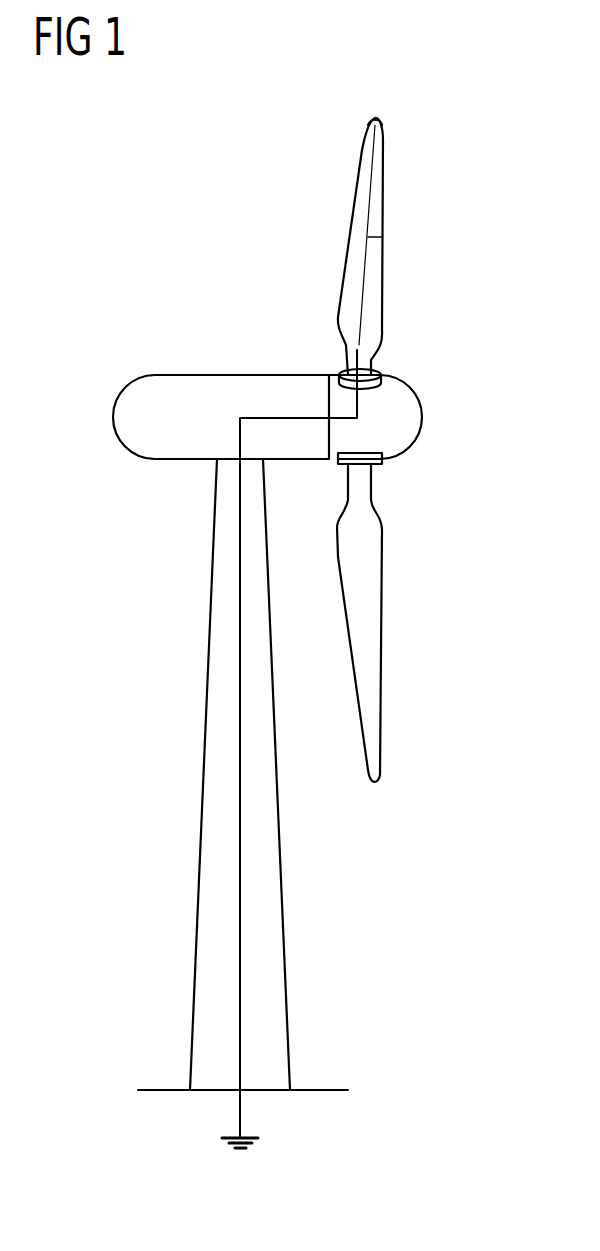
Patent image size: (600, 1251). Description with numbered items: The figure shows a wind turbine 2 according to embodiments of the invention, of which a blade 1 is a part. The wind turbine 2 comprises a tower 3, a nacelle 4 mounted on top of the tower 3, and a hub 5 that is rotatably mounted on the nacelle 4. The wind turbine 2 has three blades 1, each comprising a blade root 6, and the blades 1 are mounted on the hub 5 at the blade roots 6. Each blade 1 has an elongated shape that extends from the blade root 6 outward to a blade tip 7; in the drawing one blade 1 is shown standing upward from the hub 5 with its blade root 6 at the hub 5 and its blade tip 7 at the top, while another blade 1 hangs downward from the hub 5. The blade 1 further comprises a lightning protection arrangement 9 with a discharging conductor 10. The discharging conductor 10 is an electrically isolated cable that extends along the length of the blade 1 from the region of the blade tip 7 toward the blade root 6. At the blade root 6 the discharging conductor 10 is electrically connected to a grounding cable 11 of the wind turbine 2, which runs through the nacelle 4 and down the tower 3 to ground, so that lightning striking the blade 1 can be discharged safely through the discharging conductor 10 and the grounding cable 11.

The blade 1 is at (397, 179).
The wind turbine 2 is at (168, 198).
The tower 3 is at (282, 893).
The nacelle 4 is at (182, 375).
The hub 5 is at (408, 419).
The blade root 6 is at (368, 360).
The blade tip 7 is at (375, 116).
The lightning protection arrangement 9 is at (326, 222).
The discharging conductor 10 is at (380, 237).
The grounding cable 11 is at (282, 418).